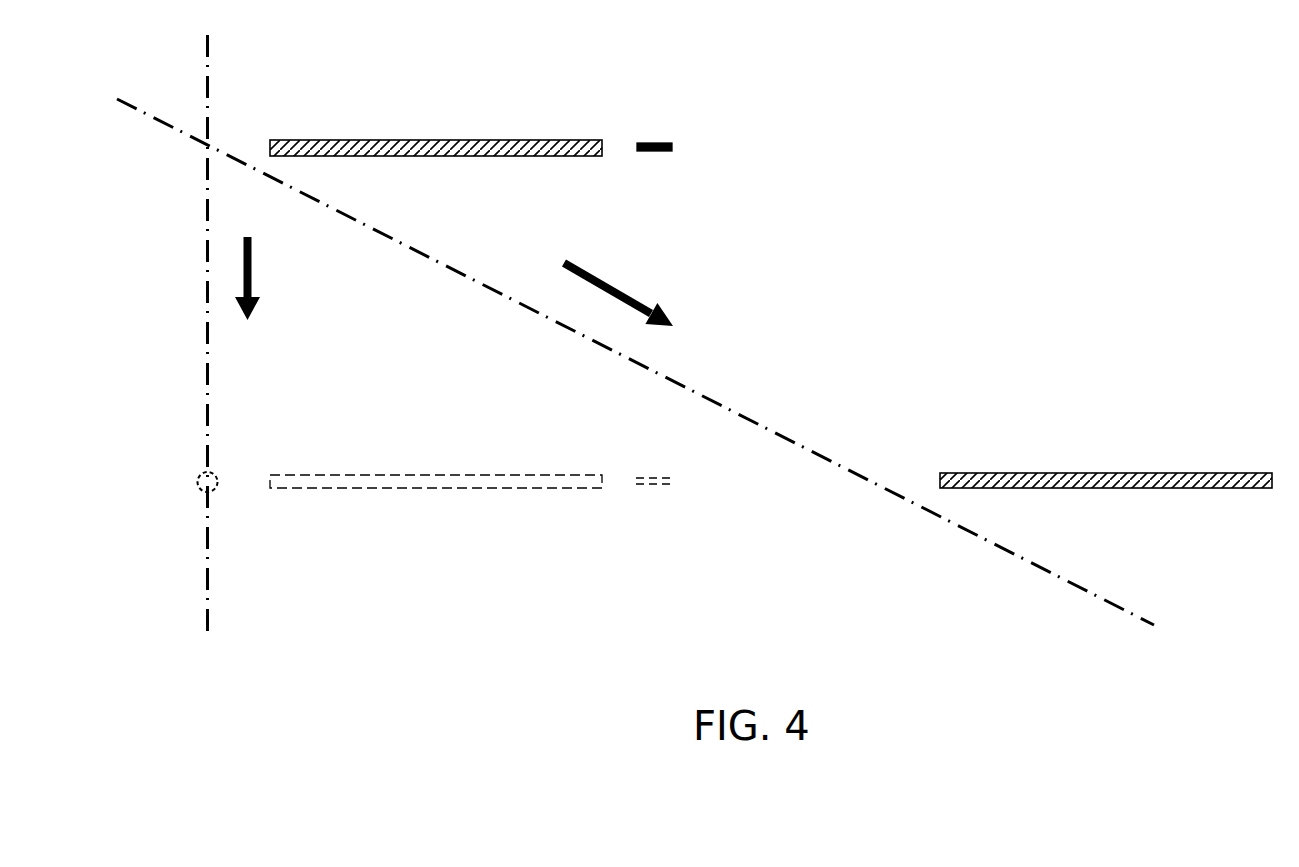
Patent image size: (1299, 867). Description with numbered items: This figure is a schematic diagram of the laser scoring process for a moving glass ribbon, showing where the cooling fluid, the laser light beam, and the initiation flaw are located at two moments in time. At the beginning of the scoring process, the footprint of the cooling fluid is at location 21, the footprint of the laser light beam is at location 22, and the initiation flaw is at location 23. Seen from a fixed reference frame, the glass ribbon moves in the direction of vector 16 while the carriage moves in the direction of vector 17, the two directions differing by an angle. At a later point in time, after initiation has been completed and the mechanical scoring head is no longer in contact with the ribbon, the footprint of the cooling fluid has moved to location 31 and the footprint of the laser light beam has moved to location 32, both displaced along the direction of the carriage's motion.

The vector representing motion of ribbon 16 is at (252, 262).
The vector representing motion of carriage 17 is at (597, 280).
The location of footprint of cooling fluid at beginning of scoring process 21 is at (206, 146).
The location of footprint of laser light beam at beginning of scoring process 22 is at (437, 140).
The location of initiation flaw at beginning of scoring process 23 is at (651, 143).
The location of footprint of cooling fluid at a later point in scoring process 31 is at (870, 478).
The location of footprint of laser light beam at later point in scoring process 32 is at (1110, 473).